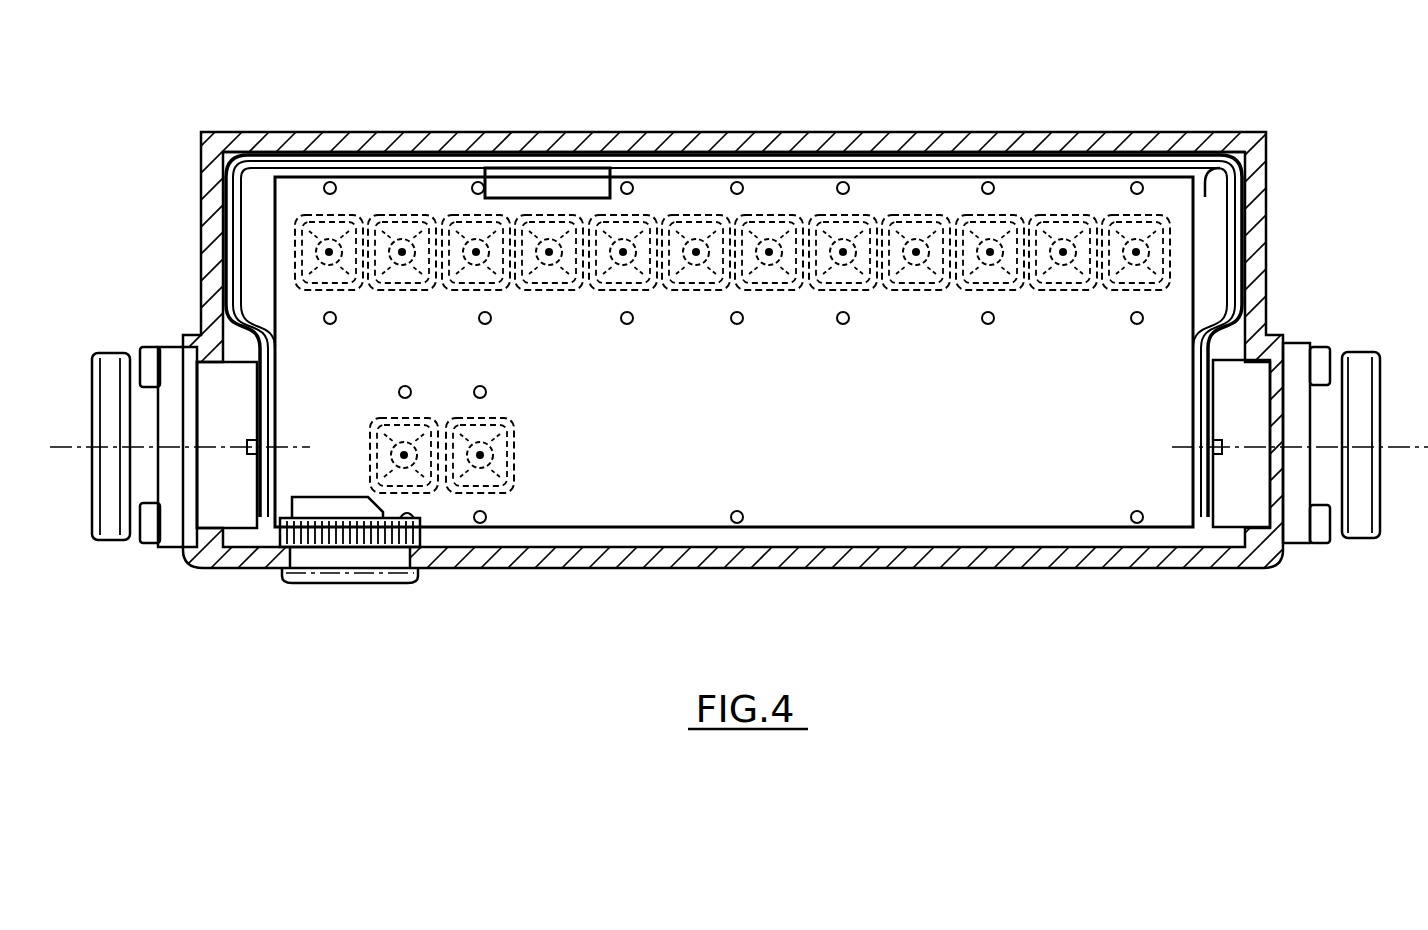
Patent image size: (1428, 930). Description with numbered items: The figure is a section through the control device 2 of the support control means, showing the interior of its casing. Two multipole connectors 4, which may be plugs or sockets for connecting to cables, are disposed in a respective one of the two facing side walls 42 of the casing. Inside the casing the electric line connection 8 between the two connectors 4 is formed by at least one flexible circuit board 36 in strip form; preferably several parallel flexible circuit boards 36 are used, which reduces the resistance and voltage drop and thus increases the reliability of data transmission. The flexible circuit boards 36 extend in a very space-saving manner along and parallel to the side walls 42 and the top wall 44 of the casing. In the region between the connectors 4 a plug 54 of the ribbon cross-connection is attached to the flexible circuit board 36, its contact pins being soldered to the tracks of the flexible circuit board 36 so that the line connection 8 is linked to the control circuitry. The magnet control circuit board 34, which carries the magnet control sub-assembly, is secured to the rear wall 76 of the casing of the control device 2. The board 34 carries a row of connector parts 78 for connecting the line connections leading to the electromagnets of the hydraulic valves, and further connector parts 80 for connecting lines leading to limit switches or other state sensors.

The control device 2 is at (233, 622).
The multipole connector 4 is at (110, 388).
The electric line connection 8 is at (740, 158).
The magnet control circuit board 34 is at (734, 352).
The flexible circuit board 36 is at (678, 158).
The side wall 42 is at (207, 200).
The top wall 44 is at (800, 142).
The plug 54 is at (567, 182).
The rear wall 76 is at (1205, 197).
The connector part 78 is at (870, 204).
The connector part 80 is at (445, 495).